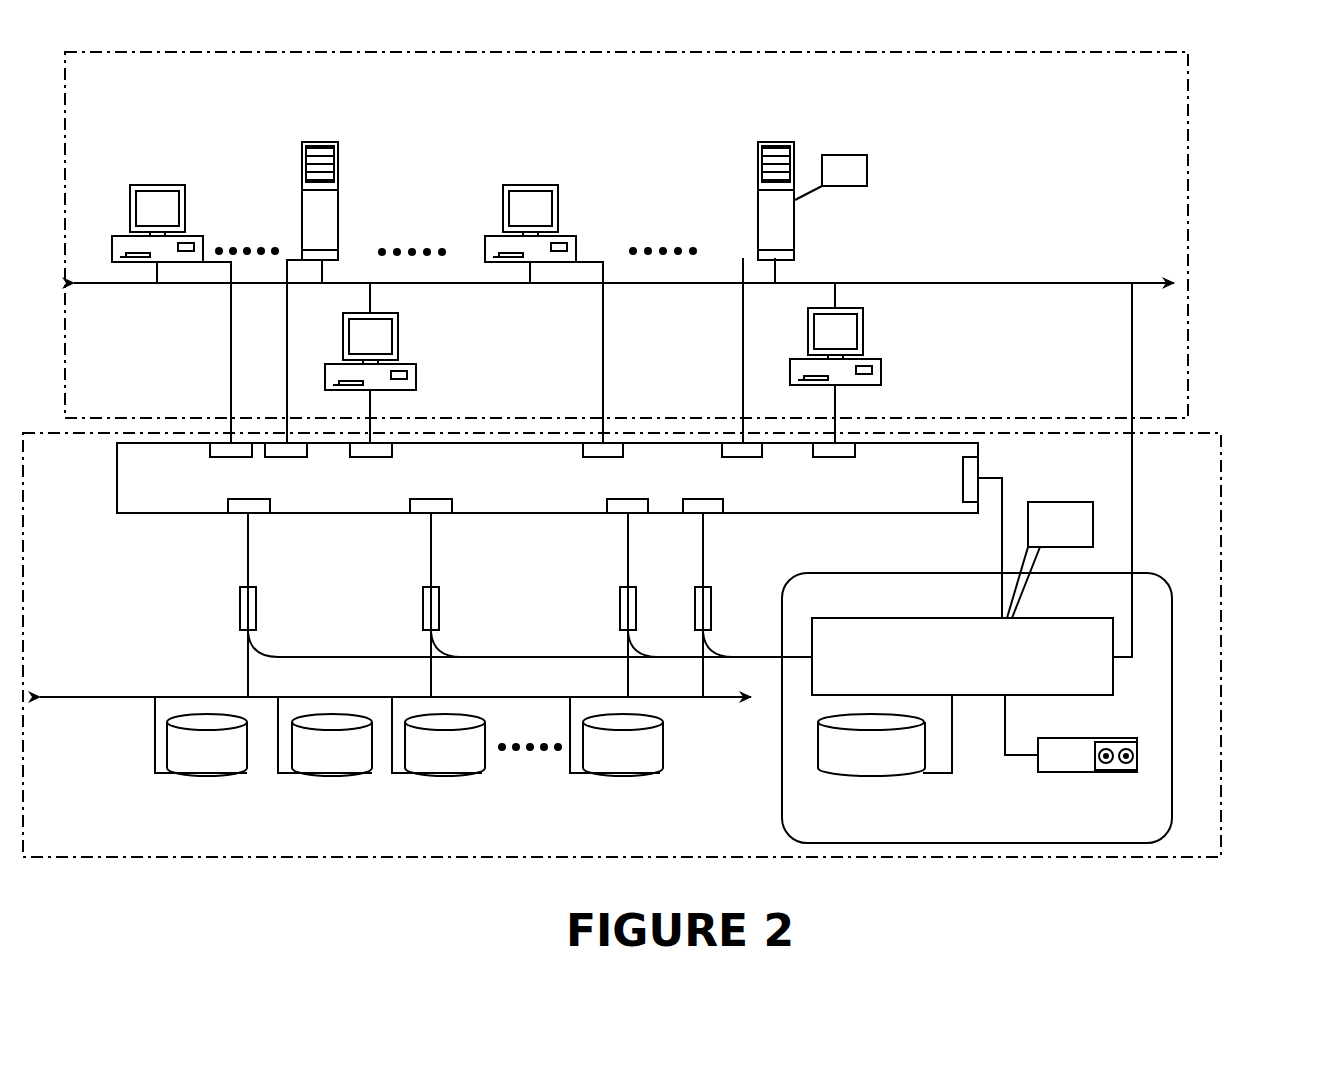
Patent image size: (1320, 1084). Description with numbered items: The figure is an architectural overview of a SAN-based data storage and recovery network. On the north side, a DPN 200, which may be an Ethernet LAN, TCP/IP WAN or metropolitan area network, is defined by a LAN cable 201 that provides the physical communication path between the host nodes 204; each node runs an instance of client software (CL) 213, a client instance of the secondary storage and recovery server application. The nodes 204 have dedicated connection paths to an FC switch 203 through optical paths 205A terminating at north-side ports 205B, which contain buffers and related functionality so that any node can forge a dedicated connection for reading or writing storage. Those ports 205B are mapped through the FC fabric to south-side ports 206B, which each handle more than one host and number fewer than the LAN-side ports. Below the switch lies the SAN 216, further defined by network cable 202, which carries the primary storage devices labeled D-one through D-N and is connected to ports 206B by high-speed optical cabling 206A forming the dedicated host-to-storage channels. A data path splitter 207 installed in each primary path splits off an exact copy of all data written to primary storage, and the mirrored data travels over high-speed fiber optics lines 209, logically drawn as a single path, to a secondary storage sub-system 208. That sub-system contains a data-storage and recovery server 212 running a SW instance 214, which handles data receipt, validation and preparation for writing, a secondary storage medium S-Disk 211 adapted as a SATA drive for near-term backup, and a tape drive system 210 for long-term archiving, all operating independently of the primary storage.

The DPN 200 is at (1197, 185).
The LAN cable 201 is at (993, 286).
The network cable 202 is at (125, 699).
The FC switch 203 is at (811, 521).
The nodes 204 is at (497, 218).
The optical paths 205A is at (603, 353).
The ports 205B is at (820, 460).
The high-speed optical cabling 206A is at (627, 585).
The south side ports 206B is at (234, 499).
The data path splitter 207 is at (421, 598).
The secondary storage sub-system 208 is at (779, 772).
The high-speed fiber optics lines 209 is at (357, 655).
The tape drive system 210 is at (1090, 740).
The secondary storage medium (S-Disk) 211 is at (878, 775).
The data-storage and recovery server 212 is at (920, 618).
The client software (CL) 213 is at (867, 170).
The SW instance 214 is at (1085, 500).
The SAN 216 is at (1228, 567).